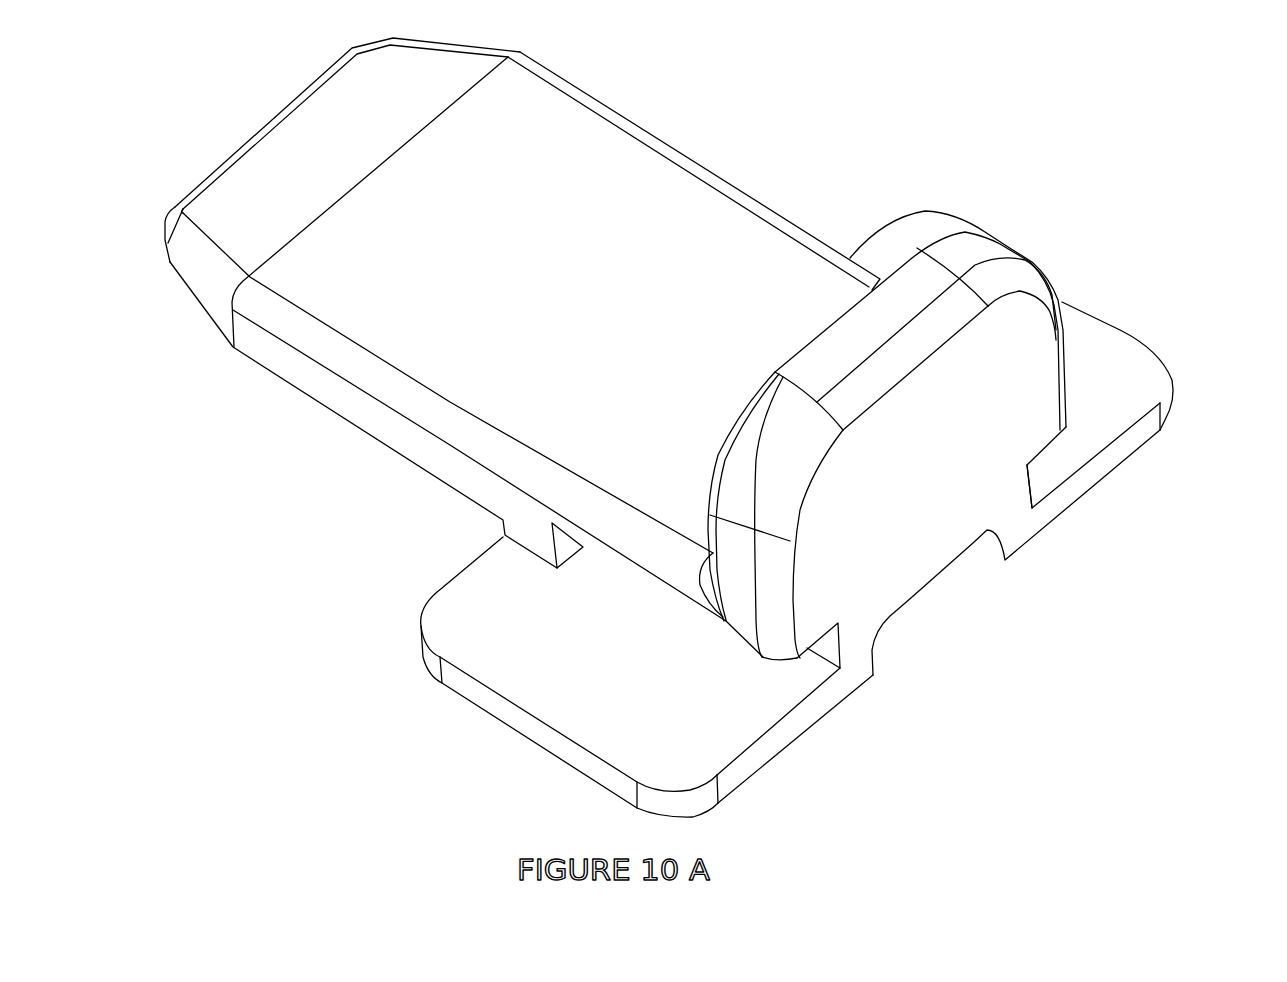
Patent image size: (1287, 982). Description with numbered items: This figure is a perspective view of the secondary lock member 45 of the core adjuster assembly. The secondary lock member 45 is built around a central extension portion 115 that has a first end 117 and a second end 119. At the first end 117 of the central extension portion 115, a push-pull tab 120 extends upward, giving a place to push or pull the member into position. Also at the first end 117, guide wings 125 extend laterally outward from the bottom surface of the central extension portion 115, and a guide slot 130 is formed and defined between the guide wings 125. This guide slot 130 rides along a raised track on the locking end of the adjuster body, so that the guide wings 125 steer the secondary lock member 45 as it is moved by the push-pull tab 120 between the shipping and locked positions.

The secondary lock member 45 is at (697, 203).
The central extension portion 115 is at (597, 137).
The second end 119 is at (222, 158).
The push-pull tab 120 is at (1005, 340).
The guide wings 125 is at (517, 673).
The first end 117 is at (1072, 498).
The guide slot 130 is at (938, 594).